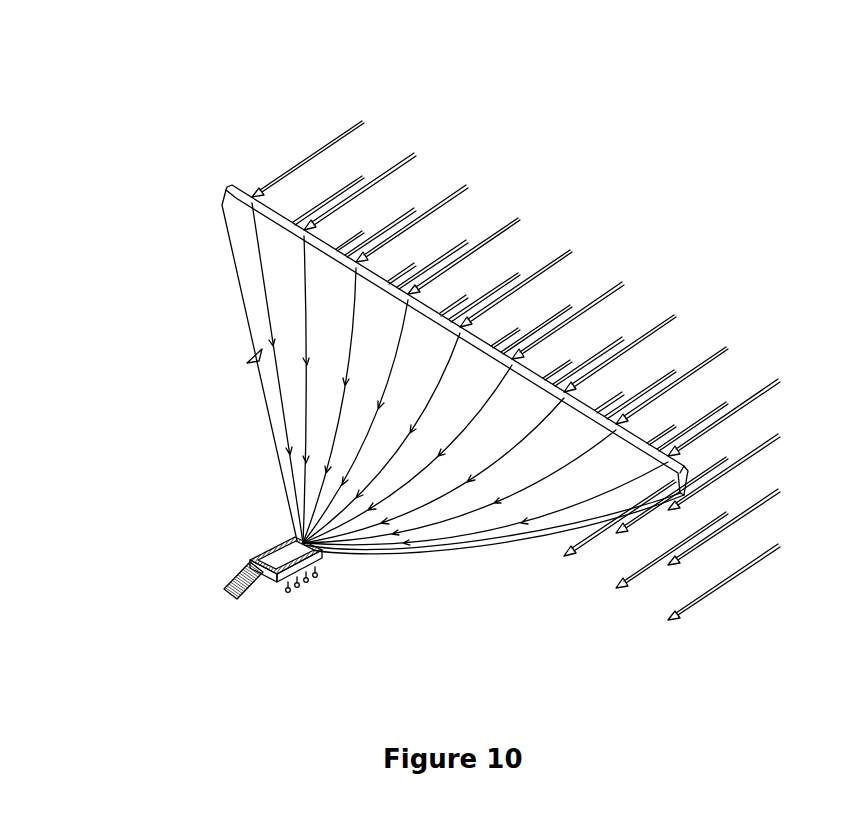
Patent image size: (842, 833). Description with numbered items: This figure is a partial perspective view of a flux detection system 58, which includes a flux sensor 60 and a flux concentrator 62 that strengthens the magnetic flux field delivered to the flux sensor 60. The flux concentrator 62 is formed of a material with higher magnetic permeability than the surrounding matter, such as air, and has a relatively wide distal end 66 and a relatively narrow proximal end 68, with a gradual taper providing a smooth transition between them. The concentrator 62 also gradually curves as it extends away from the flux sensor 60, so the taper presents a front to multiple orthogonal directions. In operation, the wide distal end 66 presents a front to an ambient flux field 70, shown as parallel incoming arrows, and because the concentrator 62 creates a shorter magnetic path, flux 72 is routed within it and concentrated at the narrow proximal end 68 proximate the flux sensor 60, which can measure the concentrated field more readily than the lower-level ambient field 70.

The flux detection system 58 is at (663, 86).
The flux sensor 60 is at (272, 550).
The flux concentrator 62 is at (237, 247).
The distal end 66 is at (240, 187).
The proximal end 68 is at (320, 553).
The ambient flux field 70 is at (506, 232).
The flux 72 is at (512, 508).